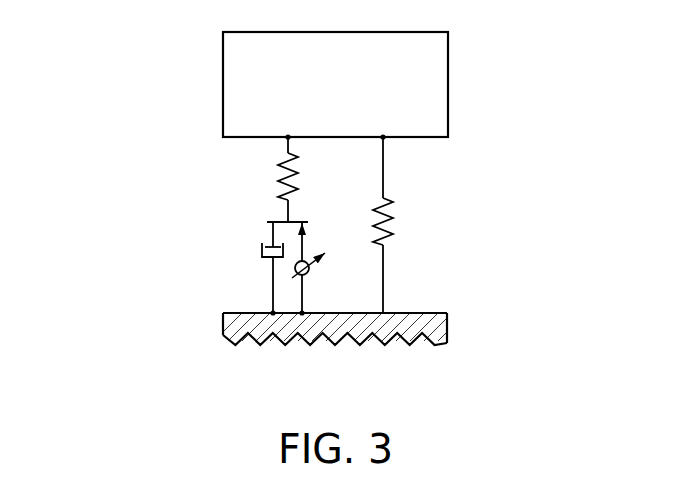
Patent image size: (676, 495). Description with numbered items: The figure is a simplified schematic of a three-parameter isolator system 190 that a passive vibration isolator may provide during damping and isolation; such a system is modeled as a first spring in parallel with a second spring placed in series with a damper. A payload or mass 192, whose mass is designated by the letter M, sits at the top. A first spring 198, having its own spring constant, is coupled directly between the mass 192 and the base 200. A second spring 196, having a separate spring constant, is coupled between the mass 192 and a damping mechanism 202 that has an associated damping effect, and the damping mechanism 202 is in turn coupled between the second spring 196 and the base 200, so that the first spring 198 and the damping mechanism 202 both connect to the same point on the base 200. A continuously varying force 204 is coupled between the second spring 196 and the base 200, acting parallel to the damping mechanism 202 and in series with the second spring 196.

The three-parameter isolator system 190 is at (99, 73).
The mass 192 is at (448, 83).
The second spring 196 is at (238, 176).
The first spring 198 is at (452, 225).
The base 200 is at (354, 374).
The damping mechanism 202 is at (210, 271).
The continuously varying force 204 is at (327, 311).